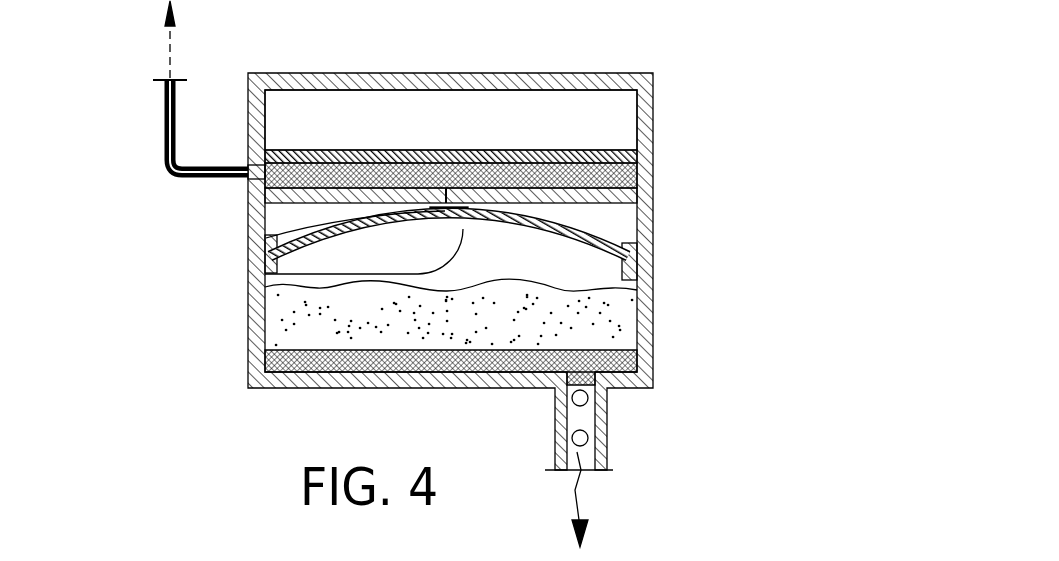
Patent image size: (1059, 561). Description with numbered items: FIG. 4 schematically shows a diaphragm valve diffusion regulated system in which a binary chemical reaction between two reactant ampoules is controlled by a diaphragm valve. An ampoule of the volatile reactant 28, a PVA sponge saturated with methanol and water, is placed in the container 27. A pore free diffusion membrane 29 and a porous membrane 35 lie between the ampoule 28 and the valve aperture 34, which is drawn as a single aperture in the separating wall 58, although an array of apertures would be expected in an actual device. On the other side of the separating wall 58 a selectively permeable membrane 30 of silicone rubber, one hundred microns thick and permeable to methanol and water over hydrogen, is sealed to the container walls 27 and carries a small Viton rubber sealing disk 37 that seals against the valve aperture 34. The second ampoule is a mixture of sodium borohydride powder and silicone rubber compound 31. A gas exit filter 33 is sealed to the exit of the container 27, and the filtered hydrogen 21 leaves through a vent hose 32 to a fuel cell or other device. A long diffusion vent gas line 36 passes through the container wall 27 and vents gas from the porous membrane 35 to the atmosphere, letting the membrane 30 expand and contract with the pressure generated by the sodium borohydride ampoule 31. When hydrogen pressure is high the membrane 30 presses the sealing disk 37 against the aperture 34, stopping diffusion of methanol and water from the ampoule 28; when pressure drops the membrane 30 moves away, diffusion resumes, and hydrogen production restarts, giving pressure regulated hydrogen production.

The container 27 is at (522, 73).
The ampoule of the volatile reactant 28 is at (640, 104).
The pore free diffusion membrane 29 is at (653, 158).
The separating wall 58 is at (653, 196).
The selectively permeable membrane 30 is at (593, 245).
The sodium borohydride ampoule 31 is at (600, 340).
The vent hose 32 is at (590, 455).
The gas exit filter 33 is at (268, 362).
The valve aperture 34 is at (280, 273).
The porous membrane 35 is at (246, 186).
The diffusion vent gas line 36 is at (165, 108).
The sealing disk 37 is at (280, 230).
The filtered hydrogen 21 is at (684, 520).